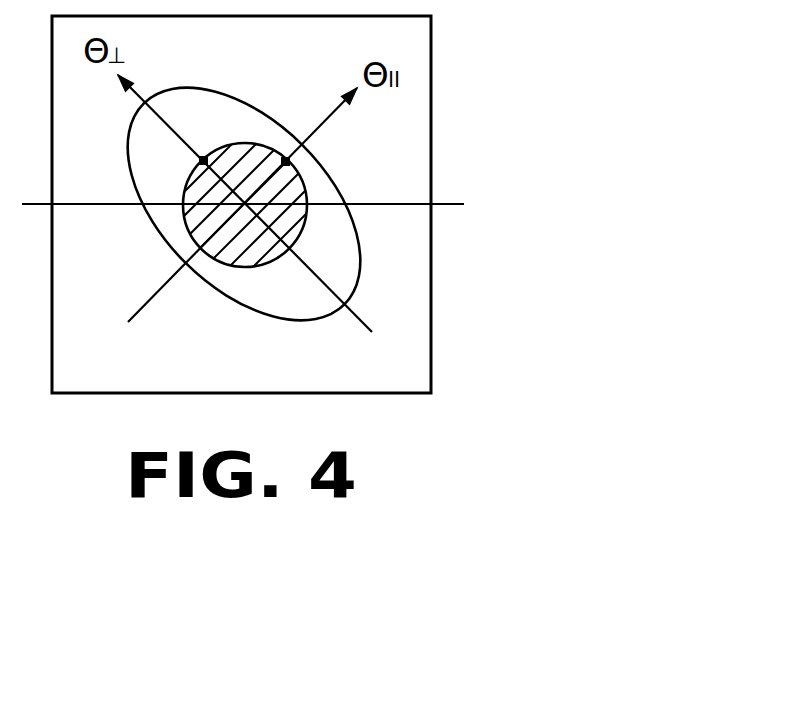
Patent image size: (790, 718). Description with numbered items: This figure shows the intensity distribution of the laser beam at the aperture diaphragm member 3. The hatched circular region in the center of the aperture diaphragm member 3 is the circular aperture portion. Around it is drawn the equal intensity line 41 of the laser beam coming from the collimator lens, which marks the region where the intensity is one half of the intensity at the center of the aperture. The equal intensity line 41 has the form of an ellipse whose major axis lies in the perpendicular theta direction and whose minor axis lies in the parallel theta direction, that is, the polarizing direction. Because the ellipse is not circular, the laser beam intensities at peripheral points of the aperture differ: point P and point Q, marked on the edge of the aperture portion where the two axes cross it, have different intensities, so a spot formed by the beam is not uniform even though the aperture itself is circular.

The aperture diaphragm member 3 is at (411, 330).
The equal intensity line 41 is at (333, 177).
The point P is at (284, 159).
The point Q is at (203, 158).